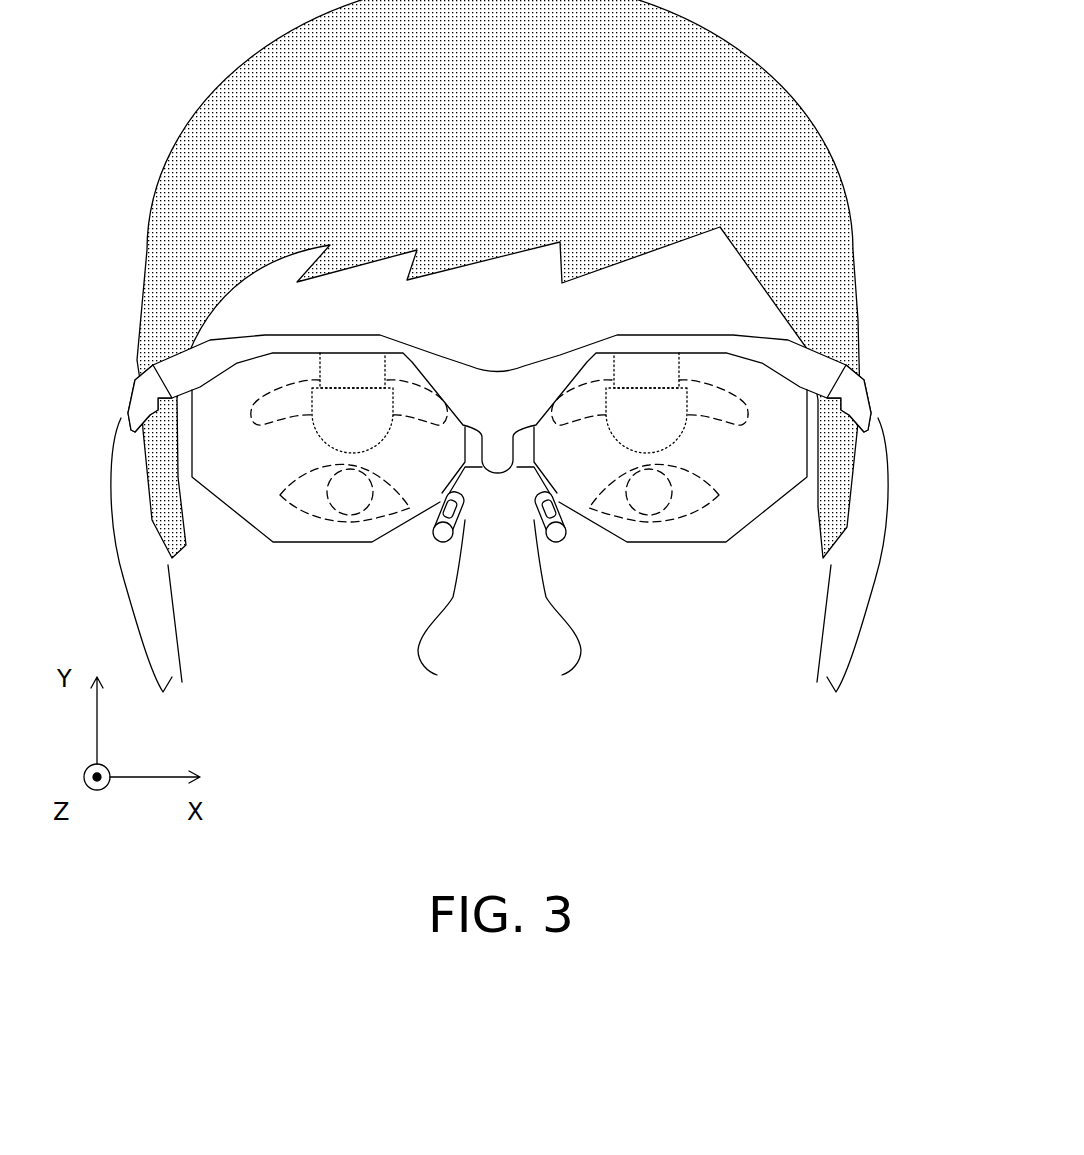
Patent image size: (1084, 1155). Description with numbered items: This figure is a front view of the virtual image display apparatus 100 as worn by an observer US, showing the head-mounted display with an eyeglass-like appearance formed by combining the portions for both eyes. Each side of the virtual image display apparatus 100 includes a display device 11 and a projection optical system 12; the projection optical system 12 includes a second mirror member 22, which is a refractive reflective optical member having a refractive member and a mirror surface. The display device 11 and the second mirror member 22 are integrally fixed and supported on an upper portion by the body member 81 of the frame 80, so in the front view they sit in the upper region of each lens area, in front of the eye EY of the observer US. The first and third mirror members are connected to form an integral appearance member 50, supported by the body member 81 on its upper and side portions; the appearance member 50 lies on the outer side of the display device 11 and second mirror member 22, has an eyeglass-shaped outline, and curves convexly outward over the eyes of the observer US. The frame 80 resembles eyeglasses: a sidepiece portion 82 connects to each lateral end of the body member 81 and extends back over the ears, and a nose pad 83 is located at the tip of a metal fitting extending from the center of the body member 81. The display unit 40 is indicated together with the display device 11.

The virtual image display apparatus 100 is at (498, 402).
The projection optical system 12 is at (498, 427).
The frame 80 is at (498, 430).
The body member 81 is at (374, 344).
The sidepiece portion 82 is at (130, 410).
The nose pad 83 is at (540, 518).
The appearance member 50 is at (323, 532).
The image display unit 40 is at (533, 340).
The display device 11 is at (388, 353).
The second mirror member 22 is at (373, 448).
The observer US is at (148, 232).
The eye EY is at (350, 505).